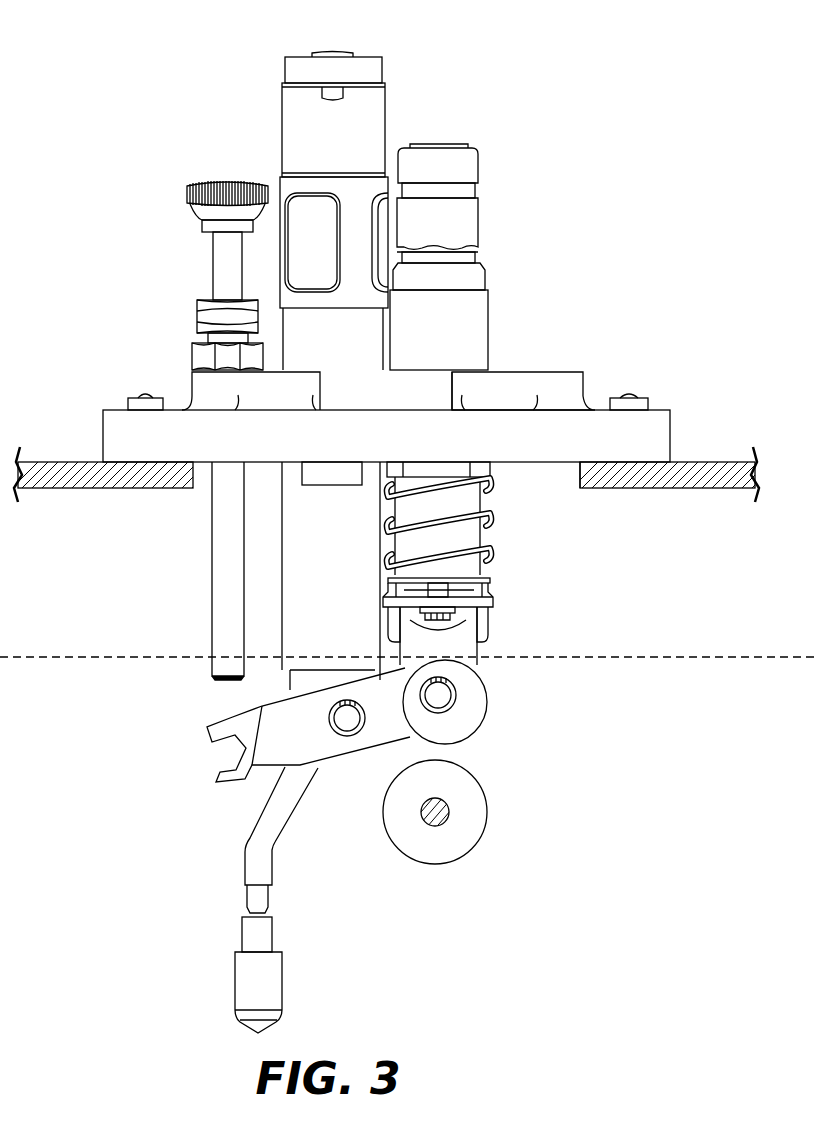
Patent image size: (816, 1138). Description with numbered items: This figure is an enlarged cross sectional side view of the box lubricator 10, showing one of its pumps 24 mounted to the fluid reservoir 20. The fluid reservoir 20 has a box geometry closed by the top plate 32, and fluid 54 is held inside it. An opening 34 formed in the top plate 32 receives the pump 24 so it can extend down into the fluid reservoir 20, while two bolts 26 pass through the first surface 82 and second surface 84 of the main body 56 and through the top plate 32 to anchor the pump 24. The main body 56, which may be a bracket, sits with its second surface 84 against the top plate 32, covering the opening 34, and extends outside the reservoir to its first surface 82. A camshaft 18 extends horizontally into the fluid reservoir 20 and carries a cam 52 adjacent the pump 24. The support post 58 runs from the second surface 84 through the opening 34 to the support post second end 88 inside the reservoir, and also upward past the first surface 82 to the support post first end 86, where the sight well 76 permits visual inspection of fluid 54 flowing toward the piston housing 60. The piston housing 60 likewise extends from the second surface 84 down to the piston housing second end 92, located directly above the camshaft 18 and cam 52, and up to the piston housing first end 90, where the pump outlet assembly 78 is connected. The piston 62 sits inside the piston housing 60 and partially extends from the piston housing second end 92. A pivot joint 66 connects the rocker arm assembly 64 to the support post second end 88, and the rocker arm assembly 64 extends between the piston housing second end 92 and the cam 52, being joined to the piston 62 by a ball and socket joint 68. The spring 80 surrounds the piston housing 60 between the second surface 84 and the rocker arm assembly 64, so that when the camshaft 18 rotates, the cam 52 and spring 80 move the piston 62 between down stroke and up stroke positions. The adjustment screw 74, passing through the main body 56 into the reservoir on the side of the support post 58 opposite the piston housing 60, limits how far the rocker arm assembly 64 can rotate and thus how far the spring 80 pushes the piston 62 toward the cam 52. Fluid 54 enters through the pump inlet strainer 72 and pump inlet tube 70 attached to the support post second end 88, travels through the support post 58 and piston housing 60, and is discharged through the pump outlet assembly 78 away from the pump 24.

The box lubricator 10 is at (116, 72).
The camshaft 18 is at (445, 812).
The fluid reservoir 20 is at (107, 634).
The pump 24 is at (403, 112).
The bolts 26 is at (130, 398).
The top plate 32 is at (700, 478).
The opening 34 is at (580, 482).
The cam 52 is at (403, 828).
The fluid 54 is at (107, 710).
The main body 56 is at (517, 385).
The support post 58 is at (297, 557).
The piston housing 60 is at (465, 540).
The piston 62 is at (450, 590).
The rocker arm assembly 64 is at (375, 754).
The pivot joint 66 is at (350, 724).
The ball and socket joint 68 is at (440, 622).
The pump inlet tube 70 is at (263, 870).
The pump inlet strainer 72 is at (265, 978).
The adjustment screw 74 is at (213, 272).
The sight well 76 is at (282, 185).
The pump outlet assembly 78 is at (465, 215).
The spring 80 is at (485, 514).
The first surface 82 is at (577, 372).
The second surface 84 is at (543, 462).
The support post first end 86 is at (318, 364).
The support post second end 88 is at (316, 666).
The piston housing first end 90 is at (456, 364).
The piston housing second end 92 is at (497, 568).